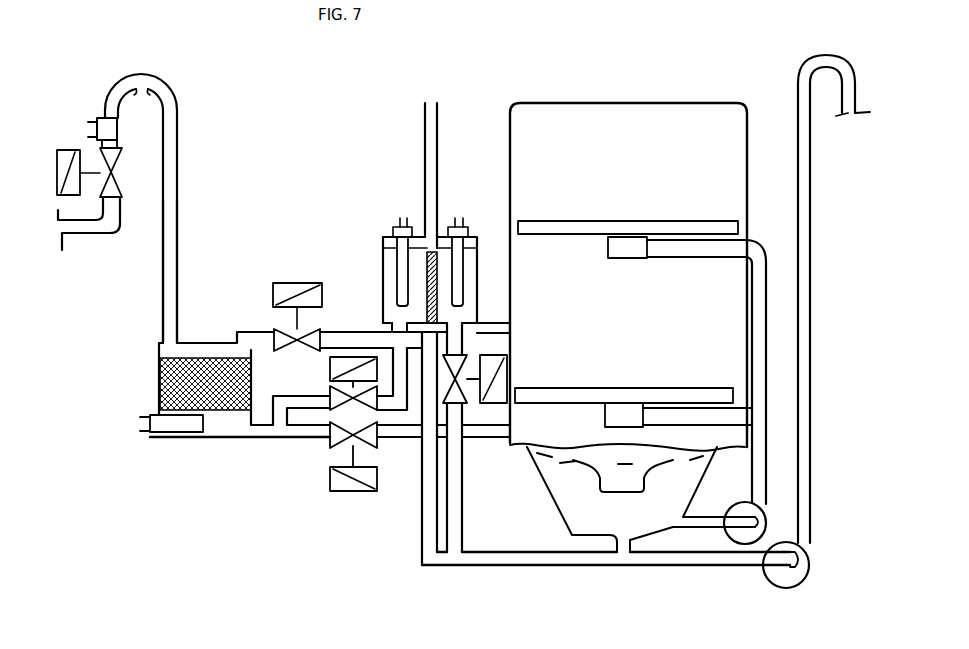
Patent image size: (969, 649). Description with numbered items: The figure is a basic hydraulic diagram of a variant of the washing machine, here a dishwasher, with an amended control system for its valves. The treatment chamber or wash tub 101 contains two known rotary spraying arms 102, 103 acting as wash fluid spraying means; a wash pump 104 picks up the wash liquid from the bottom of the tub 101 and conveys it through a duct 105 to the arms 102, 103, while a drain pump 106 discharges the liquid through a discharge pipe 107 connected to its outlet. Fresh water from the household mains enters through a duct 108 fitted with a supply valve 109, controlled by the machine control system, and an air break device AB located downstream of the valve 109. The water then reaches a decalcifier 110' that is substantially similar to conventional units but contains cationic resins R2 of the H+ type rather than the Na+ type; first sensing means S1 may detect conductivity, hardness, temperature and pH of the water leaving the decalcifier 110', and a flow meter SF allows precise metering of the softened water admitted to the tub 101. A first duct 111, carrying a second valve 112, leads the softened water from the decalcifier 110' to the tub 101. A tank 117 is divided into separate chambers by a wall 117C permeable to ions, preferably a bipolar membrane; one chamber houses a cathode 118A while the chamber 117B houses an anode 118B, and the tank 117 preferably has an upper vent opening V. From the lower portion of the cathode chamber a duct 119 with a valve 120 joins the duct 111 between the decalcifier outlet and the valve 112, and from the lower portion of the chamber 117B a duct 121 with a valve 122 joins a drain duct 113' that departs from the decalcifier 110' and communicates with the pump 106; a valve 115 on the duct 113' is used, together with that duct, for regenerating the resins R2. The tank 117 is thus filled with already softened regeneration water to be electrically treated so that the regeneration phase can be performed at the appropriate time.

The treatment chamber or wash tub 101 is at (652, 125).
The rotary spraying arm 102 is at (599, 228).
The rotary spraying arm 103 is at (585, 403).
The wash pump 104 is at (762, 520).
The duct 105 is at (760, 303).
The drain pump 106 is at (800, 560).
The discharge pipe 107 is at (807, 92).
The duct 108 is at (168, 204).
The supply valve 109 is at (65, 145).
The decalcifier 110' is at (192, 374).
The first duct 111 is at (300, 440).
The second valve 112 is at (332, 472).
The drain duct 113' is at (489, 455).
The valve 115 is at (270, 283).
The tank 117 is at (360, 246).
The chamber 117B is at (472, 320).
The wall 117C is at (437, 250).
The cathode 118A is at (398, 227).
The anode 118B is at (467, 230).
The duct 119 is at (383, 413).
The valve 120 is at (328, 366).
The duct 121 is at (455, 519).
The valve 122 is at (486, 405).
The air break device AB is at (143, 74).
The turbine flow meter SF is at (100, 118).
The cationic resins R2 is at (160, 385).
The first sensing means S1 is at (177, 430).
The upper vent opening V is at (440, 118).